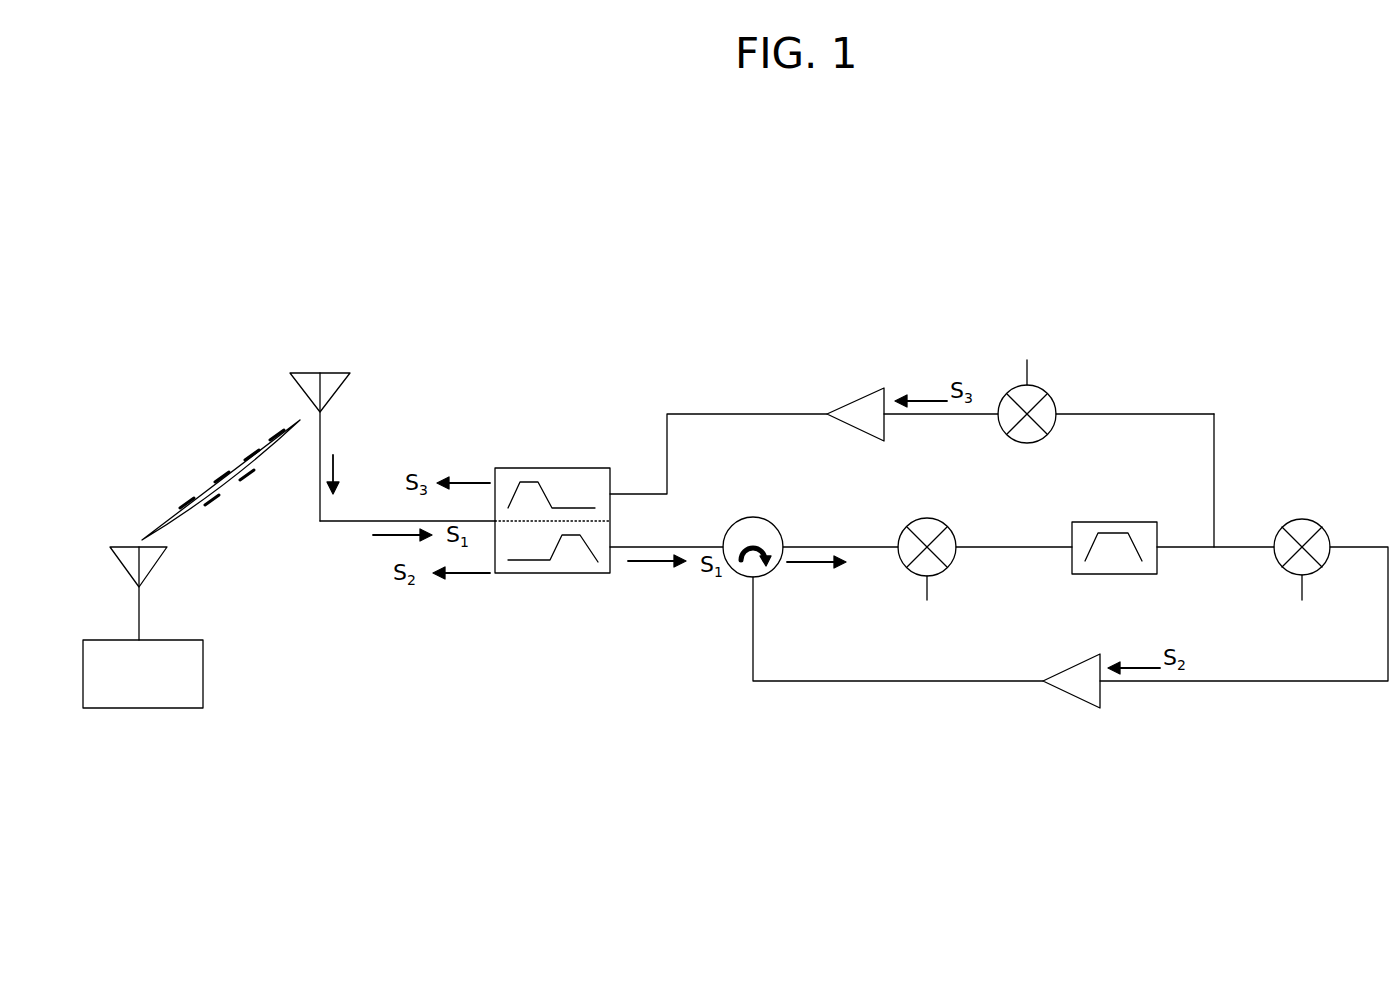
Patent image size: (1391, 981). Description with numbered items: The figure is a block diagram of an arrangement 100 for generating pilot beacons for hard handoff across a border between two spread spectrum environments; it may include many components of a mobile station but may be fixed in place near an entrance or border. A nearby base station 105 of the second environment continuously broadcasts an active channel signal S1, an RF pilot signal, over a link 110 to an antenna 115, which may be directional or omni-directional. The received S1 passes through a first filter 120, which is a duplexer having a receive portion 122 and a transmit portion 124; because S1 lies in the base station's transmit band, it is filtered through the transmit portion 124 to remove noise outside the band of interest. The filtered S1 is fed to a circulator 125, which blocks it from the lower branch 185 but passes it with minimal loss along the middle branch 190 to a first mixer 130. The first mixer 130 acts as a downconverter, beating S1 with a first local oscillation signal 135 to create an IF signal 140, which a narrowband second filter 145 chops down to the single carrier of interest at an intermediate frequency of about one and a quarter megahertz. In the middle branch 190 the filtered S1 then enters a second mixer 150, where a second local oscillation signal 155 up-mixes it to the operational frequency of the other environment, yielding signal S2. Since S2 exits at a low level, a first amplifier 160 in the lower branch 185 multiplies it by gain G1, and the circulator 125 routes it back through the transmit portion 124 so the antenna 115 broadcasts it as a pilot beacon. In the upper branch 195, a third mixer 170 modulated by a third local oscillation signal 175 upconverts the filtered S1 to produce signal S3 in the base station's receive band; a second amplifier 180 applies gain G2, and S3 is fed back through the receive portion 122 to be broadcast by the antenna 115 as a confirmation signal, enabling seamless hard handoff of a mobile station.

The arrangement 100 is at (1133, 252).
The base station 105 is at (170, 708).
The link 110 is at (208, 487).
The antenna 115 is at (309, 372).
The first filter 120 is at (549, 514).
The receive portion 122 is at (528, 467).
The transmit portion 124 is at (575, 573).
The circulator 125 is at (742, 520).
The first mixer 130 is at (910, 523).
The first local oscillation signal 135 is at (928, 585).
The IF signal 140 is at (1003, 547).
The second filter 145 is at (1107, 522).
The second mixer 150 is at (1305, 522).
The second local oscillation signal 155 is at (1303, 587).
The first amplifier 160 is at (1083, 705).
The third mixer 170 is at (1027, 442).
The third local oscillation signal 175 is at (1028, 373).
The second amplifier 180 is at (867, 390).
The lower branch 185 is at (832, 681).
The middle branch 190 is at (810, 545).
The upper branch 195 is at (680, 414).